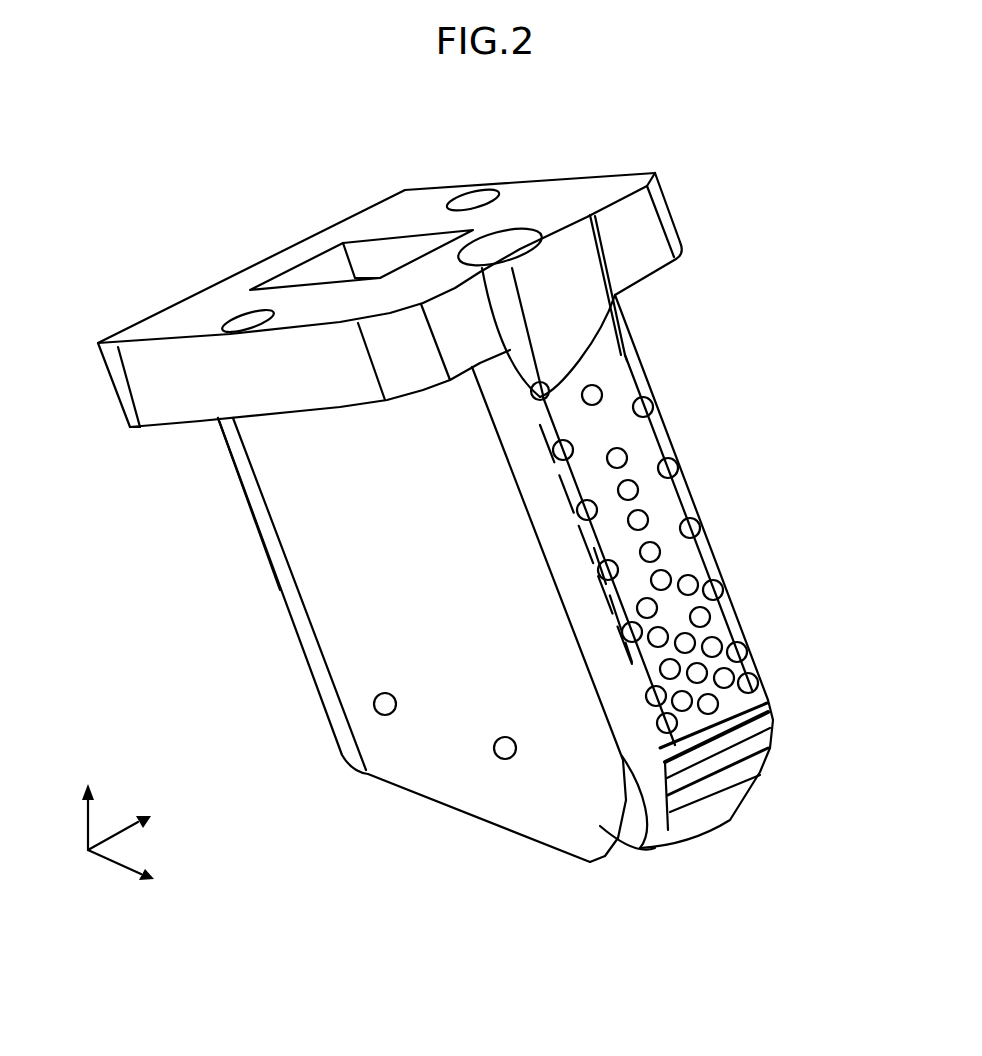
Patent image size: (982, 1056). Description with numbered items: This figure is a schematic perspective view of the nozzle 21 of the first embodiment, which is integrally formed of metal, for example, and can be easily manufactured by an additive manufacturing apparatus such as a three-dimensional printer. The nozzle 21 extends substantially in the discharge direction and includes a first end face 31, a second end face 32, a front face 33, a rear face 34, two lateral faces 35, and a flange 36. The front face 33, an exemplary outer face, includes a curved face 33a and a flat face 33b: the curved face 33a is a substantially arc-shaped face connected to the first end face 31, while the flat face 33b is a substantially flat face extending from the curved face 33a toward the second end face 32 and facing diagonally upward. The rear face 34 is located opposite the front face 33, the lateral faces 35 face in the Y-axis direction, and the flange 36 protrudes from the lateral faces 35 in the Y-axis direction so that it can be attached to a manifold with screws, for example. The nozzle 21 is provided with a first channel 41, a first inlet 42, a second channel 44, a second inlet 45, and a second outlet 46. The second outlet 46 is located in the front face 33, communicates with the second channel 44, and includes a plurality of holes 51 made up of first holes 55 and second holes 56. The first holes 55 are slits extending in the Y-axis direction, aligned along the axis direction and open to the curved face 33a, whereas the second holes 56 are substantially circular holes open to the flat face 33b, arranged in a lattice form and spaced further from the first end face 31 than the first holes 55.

The nozzle 21 is at (93, 236).
The first end face 31 is at (504, 832).
The second end face 32 is at (407, 203).
The front face 33 is at (610, 374).
The curved face 33a is at (718, 800).
The flat face 33b is at (627, 393).
The rear face 34 is at (248, 508).
The lateral faces 35 is at (317, 575).
The flange 36 is at (140, 377).
The first channel 41 is at (332, 224).
The first inlet 42 is at (363, 258).
The second channel 44 is at (479, 198).
The second inlet 45 is at (494, 241).
The second outlet 46 is at (886, 630).
The holes 51 is at (872, 632).
The first holes 55 is at (767, 733).
The second holes 56 is at (743, 592).